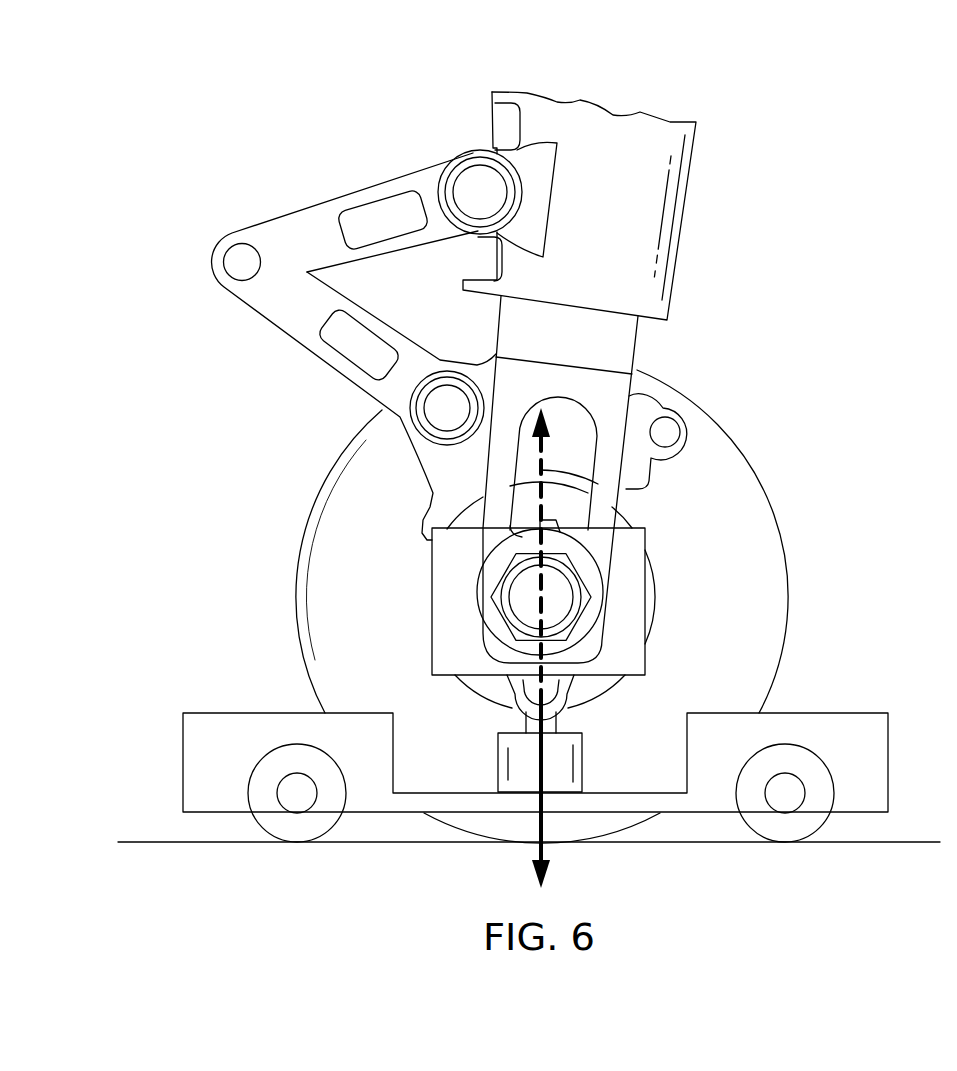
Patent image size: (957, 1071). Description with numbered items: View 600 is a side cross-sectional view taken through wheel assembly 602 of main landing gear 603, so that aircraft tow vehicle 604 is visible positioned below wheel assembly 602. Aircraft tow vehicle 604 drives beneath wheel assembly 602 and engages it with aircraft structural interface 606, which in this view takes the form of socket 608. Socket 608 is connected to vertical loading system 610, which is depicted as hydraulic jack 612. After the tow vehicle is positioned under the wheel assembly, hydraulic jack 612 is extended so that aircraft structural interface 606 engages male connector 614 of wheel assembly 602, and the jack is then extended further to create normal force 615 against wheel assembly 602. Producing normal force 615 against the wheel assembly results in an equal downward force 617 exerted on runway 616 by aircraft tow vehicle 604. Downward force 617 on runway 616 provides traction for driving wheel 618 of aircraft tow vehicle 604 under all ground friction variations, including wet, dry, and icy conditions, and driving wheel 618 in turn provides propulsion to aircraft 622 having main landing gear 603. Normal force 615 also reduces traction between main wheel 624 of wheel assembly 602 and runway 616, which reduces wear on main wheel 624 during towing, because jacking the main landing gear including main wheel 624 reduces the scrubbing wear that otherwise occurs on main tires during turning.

The view 600 is at (98, 82).
The wheel assembly 602 is at (660, 388).
The main landing gear 603 is at (331, 170).
The aircraft tow vehicle 604 is at (828, 702).
The aircraft structural interface 606 is at (600, 692).
The socket 608 is at (513, 697).
The vertical loading system 610 is at (688, 656).
The hydraulic jack 612 is at (498, 749).
The male connector 614 is at (563, 708).
The normal force 615 is at (590, 480).
The runway 616 is at (152, 842).
The downward force 617 is at (543, 823).
The driving wheel 618 is at (822, 827).
The aircraft 622 is at (215, 138).
The main wheel 624 is at (741, 447).